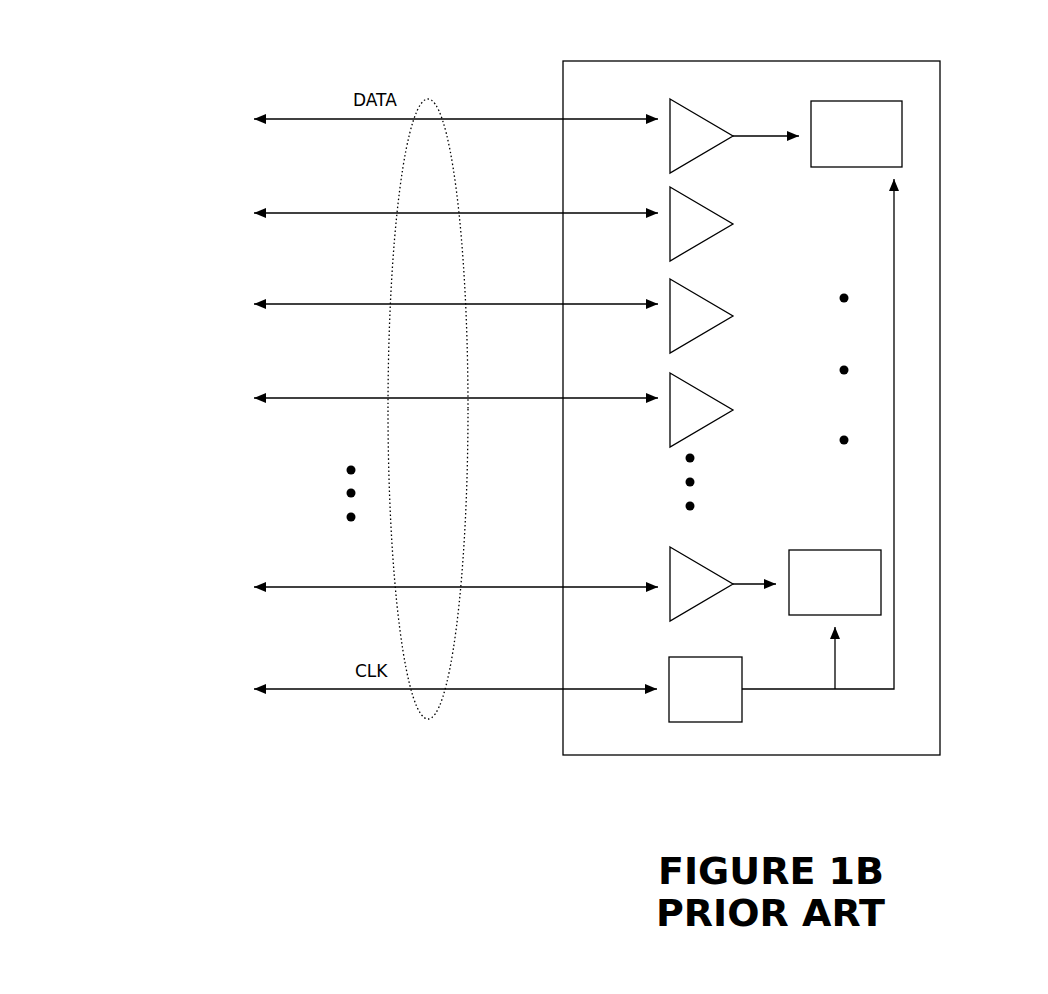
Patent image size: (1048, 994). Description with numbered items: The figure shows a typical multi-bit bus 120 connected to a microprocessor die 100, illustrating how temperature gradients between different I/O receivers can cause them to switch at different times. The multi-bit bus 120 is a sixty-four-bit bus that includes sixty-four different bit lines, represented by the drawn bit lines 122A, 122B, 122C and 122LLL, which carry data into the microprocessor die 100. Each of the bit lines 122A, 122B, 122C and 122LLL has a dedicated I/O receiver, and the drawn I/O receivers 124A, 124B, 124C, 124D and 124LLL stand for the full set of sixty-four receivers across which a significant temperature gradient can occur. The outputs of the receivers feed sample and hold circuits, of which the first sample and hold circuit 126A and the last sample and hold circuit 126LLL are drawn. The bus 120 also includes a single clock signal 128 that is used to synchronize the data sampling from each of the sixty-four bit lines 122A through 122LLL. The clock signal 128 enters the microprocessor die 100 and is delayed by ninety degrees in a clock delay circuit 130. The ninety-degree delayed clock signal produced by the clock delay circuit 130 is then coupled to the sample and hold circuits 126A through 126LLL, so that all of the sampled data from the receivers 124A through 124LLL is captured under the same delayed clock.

The microprocessor die 100 is at (647, 61).
The multi-bit bus 120 is at (440, 712).
The bit line 122A is at (258, 118).
The bit line 122B is at (282, 212).
The bit line 122C is at (282, 397).
The bit line 122LLL is at (265, 586).
The I/O receiver 124A is at (670, 100).
The I/O receiver 124B is at (703, 207).
The I/O receiver 124C is at (703, 293).
The I/O receiver 124D is at (703, 388).
The I/O receiver 124LLL is at (673, 547).
The sample and hold circuit 126A is at (828, 101).
The sample and hold circuit 126LLL is at (881, 578).
The clock signal 128 is at (320, 692).
The clock delay circuit 130 is at (705, 722).